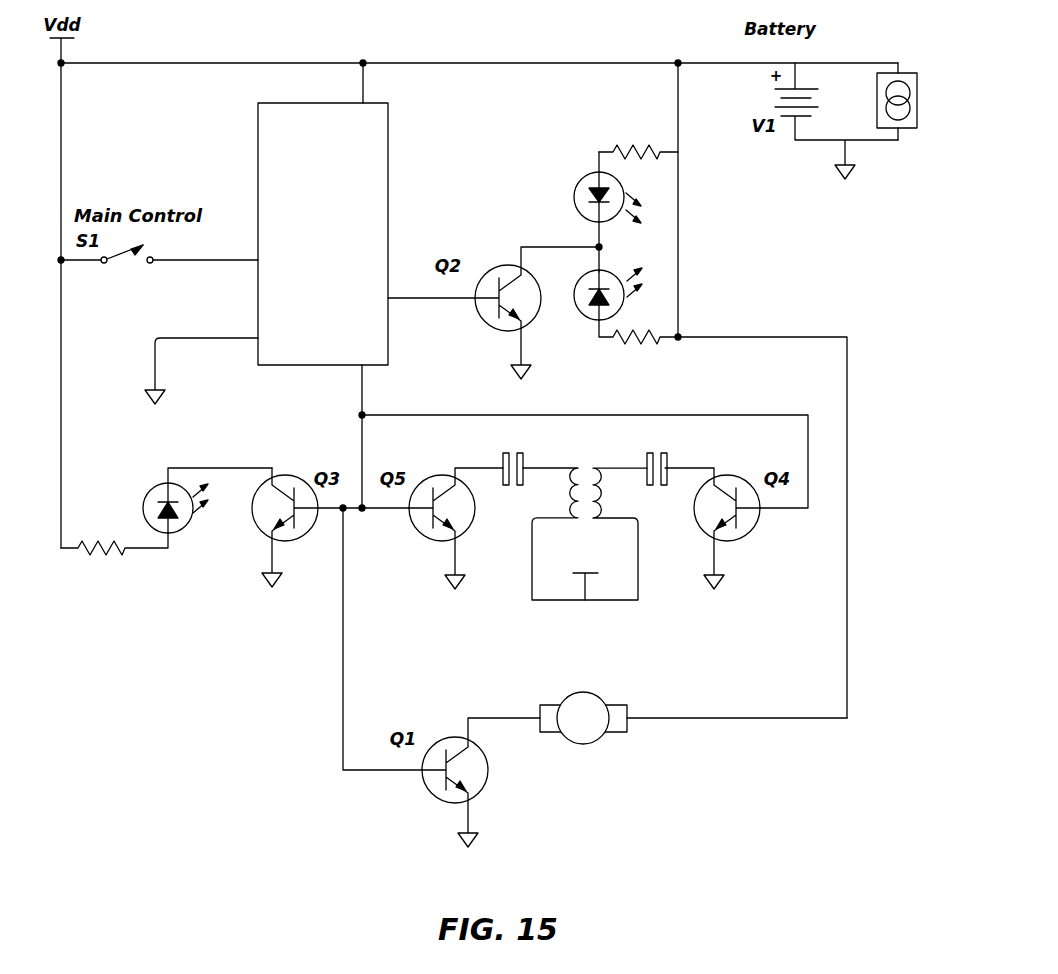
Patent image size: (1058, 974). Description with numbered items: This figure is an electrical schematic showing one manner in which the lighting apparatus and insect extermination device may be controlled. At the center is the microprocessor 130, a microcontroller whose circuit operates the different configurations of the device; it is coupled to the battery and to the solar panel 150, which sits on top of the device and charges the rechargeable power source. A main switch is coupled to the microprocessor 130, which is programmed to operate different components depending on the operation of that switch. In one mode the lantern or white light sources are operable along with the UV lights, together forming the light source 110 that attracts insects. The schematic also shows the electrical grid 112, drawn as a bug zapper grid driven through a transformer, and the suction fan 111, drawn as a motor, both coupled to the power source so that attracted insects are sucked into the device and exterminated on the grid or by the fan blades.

The light source 110 is at (547, 223).
The vacuum fan 111 is at (628, 730).
The electrical grid 112 is at (670, 626).
The microprocessor 130 is at (302, 186).
The solar panel 150 is at (941, 112).